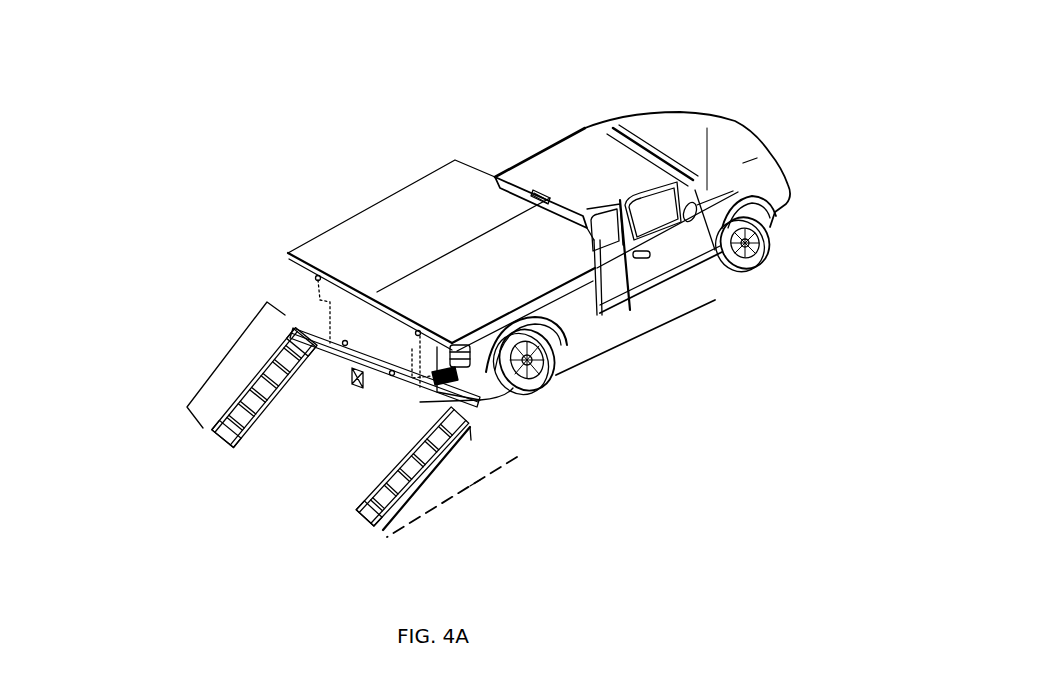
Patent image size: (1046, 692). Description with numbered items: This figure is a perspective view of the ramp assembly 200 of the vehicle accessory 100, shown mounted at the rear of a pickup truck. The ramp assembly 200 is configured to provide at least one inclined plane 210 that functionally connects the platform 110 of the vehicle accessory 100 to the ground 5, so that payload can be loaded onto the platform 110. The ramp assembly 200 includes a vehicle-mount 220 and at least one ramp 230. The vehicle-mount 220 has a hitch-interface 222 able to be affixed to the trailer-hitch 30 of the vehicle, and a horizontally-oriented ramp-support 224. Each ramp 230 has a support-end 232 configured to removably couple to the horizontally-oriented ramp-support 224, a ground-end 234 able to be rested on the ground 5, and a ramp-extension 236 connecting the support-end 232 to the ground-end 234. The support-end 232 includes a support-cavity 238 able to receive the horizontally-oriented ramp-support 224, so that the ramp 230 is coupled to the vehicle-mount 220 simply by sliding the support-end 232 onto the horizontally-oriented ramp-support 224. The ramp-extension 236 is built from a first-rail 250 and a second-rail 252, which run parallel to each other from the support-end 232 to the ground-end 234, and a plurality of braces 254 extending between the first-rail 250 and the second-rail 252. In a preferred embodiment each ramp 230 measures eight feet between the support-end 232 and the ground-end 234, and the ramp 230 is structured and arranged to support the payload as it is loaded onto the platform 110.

The vehicle accessory 100 is at (820, 46).
The ramp assembly 200 is at (828, 76).
The platform 110 is at (407, 193).
The trailer-hitch 30 is at (387, 373).
The vehicle-mount 220 is at (352, 380).
The hitch-interface 222 is at (378, 380).
The horizontally-oriented ramp-support 224 is at (513, 388).
The ramp 230 is at (227, 356).
The support-end 232 is at (300, 325).
The ground-end 234 is at (225, 440).
The ramp-extension 236 is at (289, 396).
The support-cavity 238 is at (470, 427).
The first-rail 250 is at (373, 487).
The second-rail 252 is at (383, 530).
The plurality of braces 254 is at (402, 475).
The inclined plane 210 is at (485, 465).
The ground 5 is at (470, 493).